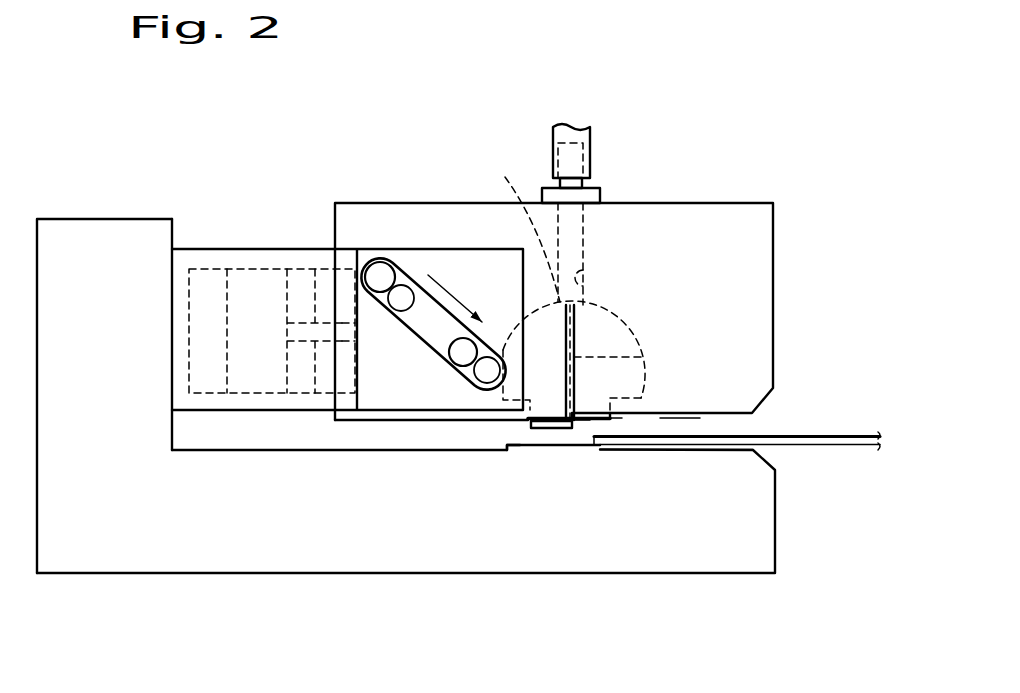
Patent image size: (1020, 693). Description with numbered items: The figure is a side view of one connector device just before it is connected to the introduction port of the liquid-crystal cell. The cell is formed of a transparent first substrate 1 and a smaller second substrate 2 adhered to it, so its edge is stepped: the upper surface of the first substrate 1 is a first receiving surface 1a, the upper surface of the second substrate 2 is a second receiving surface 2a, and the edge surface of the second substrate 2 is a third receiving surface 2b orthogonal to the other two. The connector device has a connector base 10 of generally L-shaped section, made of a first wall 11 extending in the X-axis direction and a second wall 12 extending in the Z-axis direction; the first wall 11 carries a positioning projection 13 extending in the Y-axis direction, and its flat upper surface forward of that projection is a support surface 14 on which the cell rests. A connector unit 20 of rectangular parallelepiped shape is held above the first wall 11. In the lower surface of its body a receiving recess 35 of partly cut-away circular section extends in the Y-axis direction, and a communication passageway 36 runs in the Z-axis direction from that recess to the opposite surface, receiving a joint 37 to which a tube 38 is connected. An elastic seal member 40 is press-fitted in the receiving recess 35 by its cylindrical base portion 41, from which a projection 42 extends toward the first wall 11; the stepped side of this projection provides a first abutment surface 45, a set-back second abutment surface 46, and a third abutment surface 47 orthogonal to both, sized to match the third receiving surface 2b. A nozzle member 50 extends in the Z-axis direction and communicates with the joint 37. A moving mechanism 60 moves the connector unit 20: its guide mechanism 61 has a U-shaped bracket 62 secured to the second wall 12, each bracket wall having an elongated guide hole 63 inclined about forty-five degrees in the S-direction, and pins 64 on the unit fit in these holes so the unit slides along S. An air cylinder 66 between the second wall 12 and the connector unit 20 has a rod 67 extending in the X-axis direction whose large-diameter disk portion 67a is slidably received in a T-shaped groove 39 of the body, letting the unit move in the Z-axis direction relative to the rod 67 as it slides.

The first substrate 1 is at (823, 450).
The first receiving surface 1a is at (541, 450).
The second substrate 2 is at (799, 434).
The second receiving surface 2a is at (622, 418).
The third receiving surface 2b is at (590, 418).
The connector base 10 is at (153, 205).
The first wall 11 is at (455, 540).
The second wall 12 is at (99, 243).
The positioning projection 13 is at (490, 446).
The support surface 14 is at (673, 425).
The connector unit 20 is at (667, 200).
The receiving recess 35 is at (524, 221).
The communication passageway 36 is at (589, 282).
The joint 37 is at (586, 246).
The tube 38 is at (595, 140).
The groove 39 is at (345, 396).
The seal member 40 is at (626, 321).
The base portion 41 is at (632, 335).
The projection 42 is at (559, 432).
The first abutment surface 45 is at (545, 433).
The second abutment surface 46 is at (606, 424).
The third abutment surface 47 is at (584, 424).
The nozzle member 50 is at (641, 357).
The moving mechanism 60 is at (294, 226).
The guide mechanism 61 is at (413, 270).
The bracket 62 is at (226, 248).
The guide hole 63 is at (416, 318).
The pin 64 is at (389, 275).
The air cylinder 66 is at (248, 395).
The rod 67 is at (300, 345).
The disk portion 67a is at (376, 266).